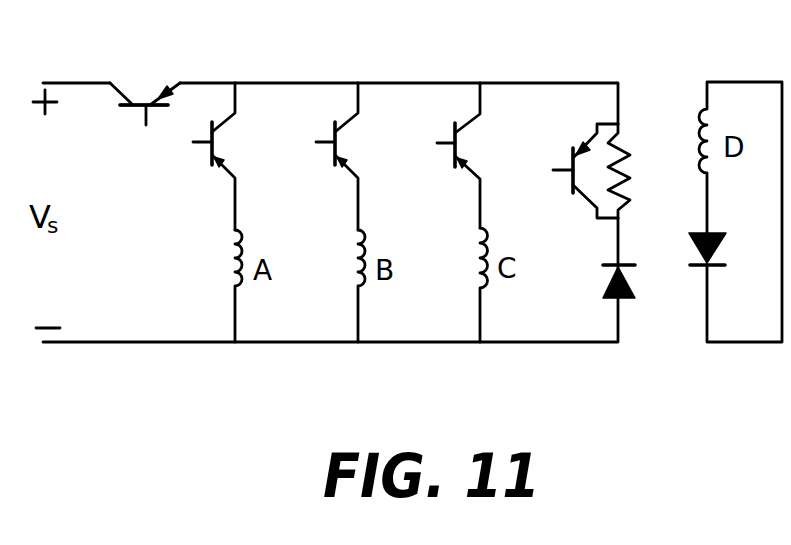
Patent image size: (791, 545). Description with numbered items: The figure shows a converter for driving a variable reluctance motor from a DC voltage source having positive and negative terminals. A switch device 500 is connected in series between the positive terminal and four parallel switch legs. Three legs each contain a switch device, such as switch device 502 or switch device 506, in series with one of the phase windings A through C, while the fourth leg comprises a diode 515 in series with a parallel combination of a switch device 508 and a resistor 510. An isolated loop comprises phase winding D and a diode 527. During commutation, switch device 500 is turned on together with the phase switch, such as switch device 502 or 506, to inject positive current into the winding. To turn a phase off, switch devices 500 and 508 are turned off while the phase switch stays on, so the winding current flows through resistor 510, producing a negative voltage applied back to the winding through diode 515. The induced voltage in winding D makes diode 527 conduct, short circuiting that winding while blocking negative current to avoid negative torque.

The switch device 500 is at (144, 126).
The switch device 502 is at (339, 164).
The switch device 506 is at (470, 178).
The switch device 508 is at (586, 140).
The resistor 510 is at (629, 168).
The diode 515 is at (603, 297).
The diode 527 is at (690, 265).